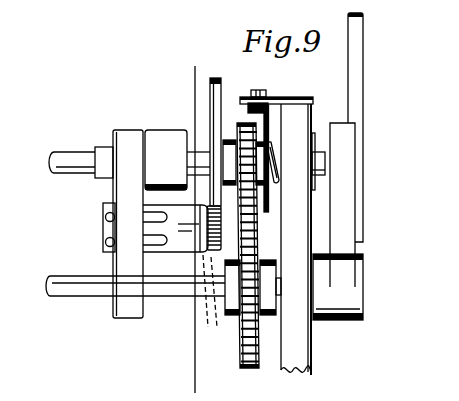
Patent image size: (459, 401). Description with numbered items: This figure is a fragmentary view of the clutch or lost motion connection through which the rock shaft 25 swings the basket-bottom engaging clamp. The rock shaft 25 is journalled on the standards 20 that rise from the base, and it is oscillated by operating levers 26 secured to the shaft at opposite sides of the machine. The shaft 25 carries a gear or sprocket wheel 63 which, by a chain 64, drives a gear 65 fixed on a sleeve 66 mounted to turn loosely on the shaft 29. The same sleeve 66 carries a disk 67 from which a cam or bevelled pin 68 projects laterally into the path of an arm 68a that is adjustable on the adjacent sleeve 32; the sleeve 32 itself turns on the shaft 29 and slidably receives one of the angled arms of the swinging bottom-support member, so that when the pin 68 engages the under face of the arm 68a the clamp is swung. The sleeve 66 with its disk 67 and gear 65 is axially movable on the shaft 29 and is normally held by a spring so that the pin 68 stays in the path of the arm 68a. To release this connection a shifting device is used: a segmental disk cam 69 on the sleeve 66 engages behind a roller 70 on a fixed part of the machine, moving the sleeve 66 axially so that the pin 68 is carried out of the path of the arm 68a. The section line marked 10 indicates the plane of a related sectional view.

The section line 10- 10 is at (193, 72).
The standards 20 is at (298, 355).
The rock shaft 25 is at (82, 294).
The operating lever 26 is at (345, 150).
The shaft 29 is at (64, 168).
The sleeve 32 is at (125, 267).
The sprocket wheel 63 is at (250, 326).
The chain 64 is at (257, 243).
The gear 65 is at (245, 145).
The sleeve 66 is at (226, 138).
The disk 67 is at (209, 92).
The bevelled pin 68 is at (216, 276).
The arm 68a is at (177, 250).
The segmental disk cam 69 is at (268, 128).
The roller 70 is at (267, 99).